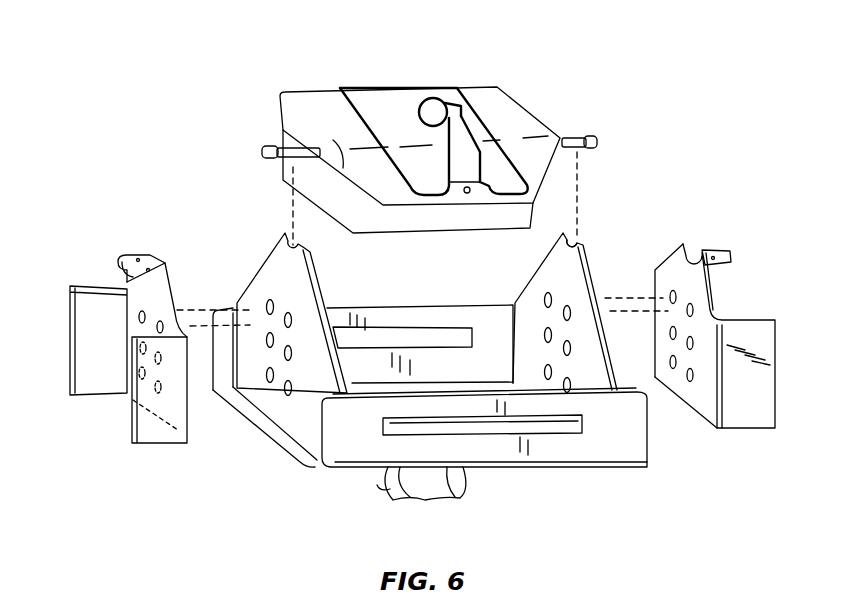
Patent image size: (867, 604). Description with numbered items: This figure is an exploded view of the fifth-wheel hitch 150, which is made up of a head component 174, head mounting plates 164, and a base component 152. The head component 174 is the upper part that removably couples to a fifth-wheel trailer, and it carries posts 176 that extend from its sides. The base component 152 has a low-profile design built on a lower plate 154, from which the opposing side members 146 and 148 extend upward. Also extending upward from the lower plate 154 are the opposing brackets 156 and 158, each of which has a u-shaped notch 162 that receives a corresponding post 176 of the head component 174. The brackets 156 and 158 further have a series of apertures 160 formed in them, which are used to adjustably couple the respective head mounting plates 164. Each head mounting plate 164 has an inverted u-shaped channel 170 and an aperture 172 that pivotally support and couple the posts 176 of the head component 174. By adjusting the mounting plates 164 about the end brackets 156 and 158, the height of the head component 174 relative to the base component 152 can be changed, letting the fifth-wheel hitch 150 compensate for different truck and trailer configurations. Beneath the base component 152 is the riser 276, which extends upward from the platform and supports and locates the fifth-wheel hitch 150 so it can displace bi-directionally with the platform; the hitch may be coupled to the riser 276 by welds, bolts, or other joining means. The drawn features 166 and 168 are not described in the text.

The fifth-wheel hitch 150 is at (112, 90).
The head component 174 is at (525, 88).
The posts 176 is at (290, 143).
The bracket 158 is at (280, 265).
The bracket 156 is at (572, 268).
The apertures 160 is at (567, 310).
The u-shaped notch 162 is at (573, 240).
The side member 148 is at (382, 317).
The base component 152 is at (643, 473).
The lower plate 154 is at (272, 428).
The side member 146 is at (360, 433).
The riser 276 is at (445, 485).
The inverted u-shaped channel 170 is at (692, 242).
The head mounting plate 164 is at (773, 435).
The side wall 166 is at (753, 397).
The aperture 172 is at (730, 258).
The bracket holes 168 is at (663, 372).